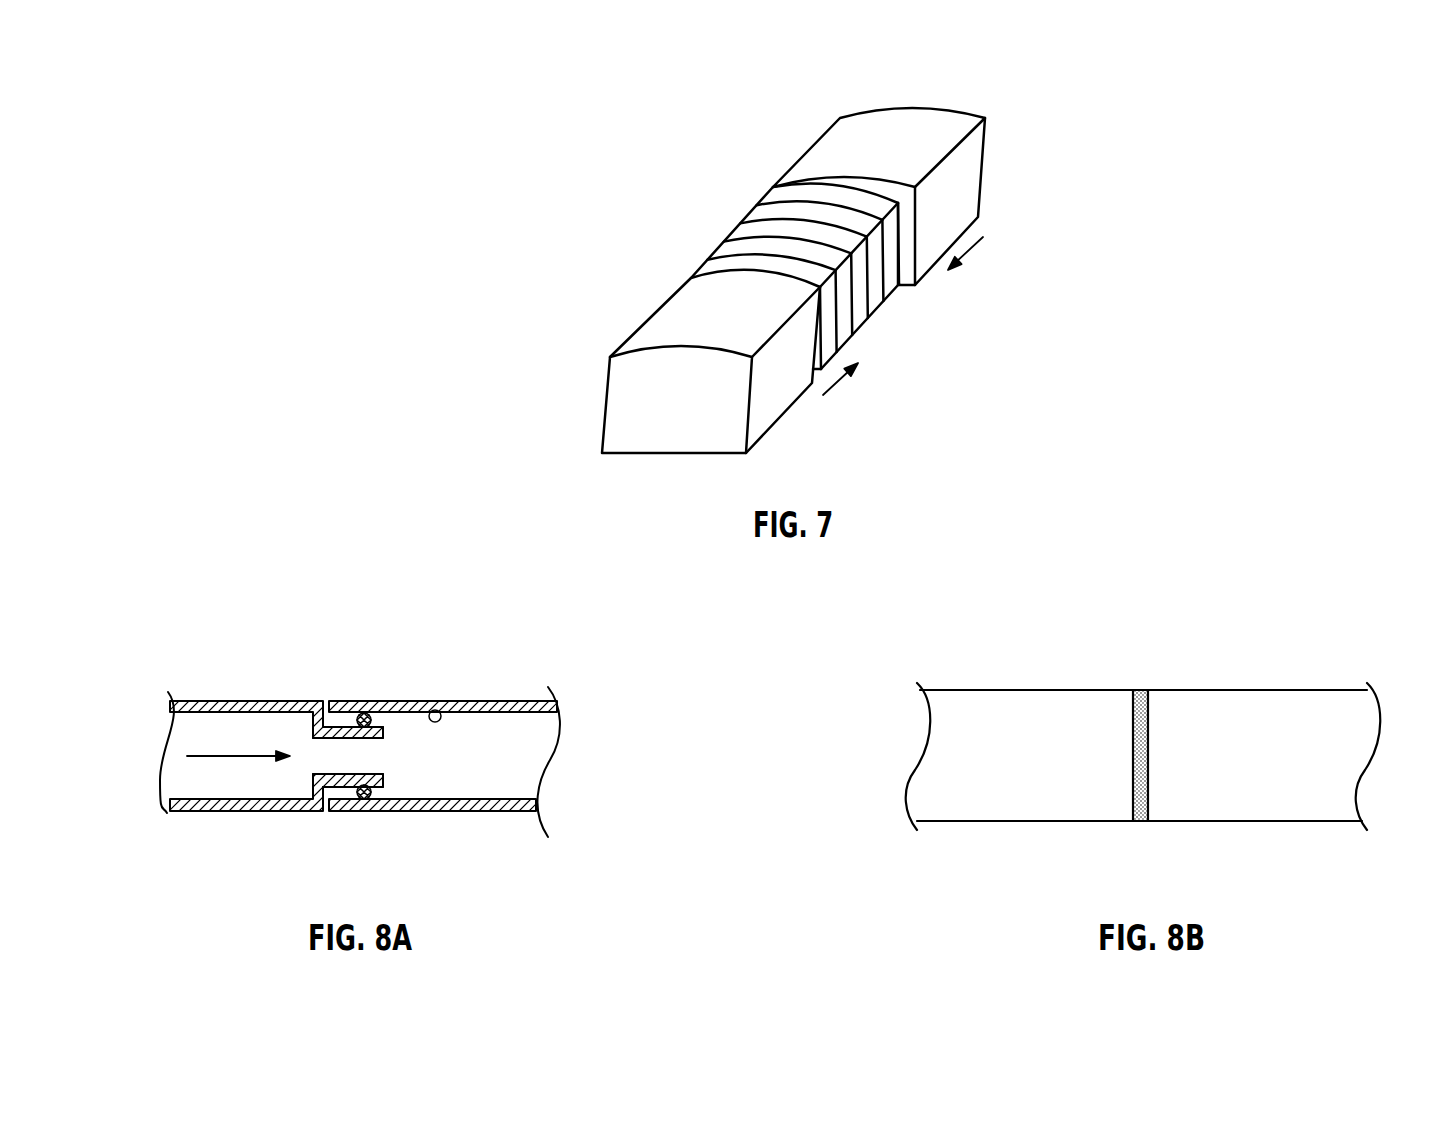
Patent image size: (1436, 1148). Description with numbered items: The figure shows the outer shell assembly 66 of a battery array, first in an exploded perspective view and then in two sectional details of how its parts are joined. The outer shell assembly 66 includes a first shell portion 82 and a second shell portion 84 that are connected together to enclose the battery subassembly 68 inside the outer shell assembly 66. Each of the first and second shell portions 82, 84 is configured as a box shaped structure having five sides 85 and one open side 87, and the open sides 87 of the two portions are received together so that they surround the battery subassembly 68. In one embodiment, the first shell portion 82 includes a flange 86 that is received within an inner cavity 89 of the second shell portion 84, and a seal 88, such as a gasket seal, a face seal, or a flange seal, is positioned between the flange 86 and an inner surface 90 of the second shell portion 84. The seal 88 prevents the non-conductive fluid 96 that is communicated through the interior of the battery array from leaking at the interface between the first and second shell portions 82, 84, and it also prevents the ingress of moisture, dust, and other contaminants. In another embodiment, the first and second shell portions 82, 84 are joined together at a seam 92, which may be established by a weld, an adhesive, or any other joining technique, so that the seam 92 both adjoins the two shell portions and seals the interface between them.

In FIG. 7, the outer shell assembly 66 is at (801, 280).
In FIG. 8A, the outer shell assembly 66 is at (365, 760).
In FIG. 8B, the outer shell assembly 66 is at (1166, 749).
In FIG. 7, the battery subassembly 68 is at (748, 230).
In FIG. 7, the first shell portion 82 is at (654, 328).
In FIG. 8A, the first shell portion 82 is at (263, 800).
In FIG. 8B, the first shell portion 82 is at (1010, 812).
In FIG. 7, the second shell portion 84 is at (838, 156).
In FIG. 8A, the second shell portion 84 is at (457, 812).
In FIG. 8B, the second shell portion 84 is at (1275, 812).
In FIG. 7, the sides 85 is at (805, 281).
In FIG. 8A, the flange 86 is at (342, 777).
In FIG. 7, the open side 87 is at (880, 194).
In FIG. 8A, the seal 88 is at (363, 798).
In FIG. 8A, the inner cavity 89 is at (474, 777).
In FIG. 8A, the inner surface 90 is at (437, 709).
In FIG. 8B, the seam 92 is at (1140, 813).
In FIG. 8A, the non-conductive fluid 96 is at (238, 758).